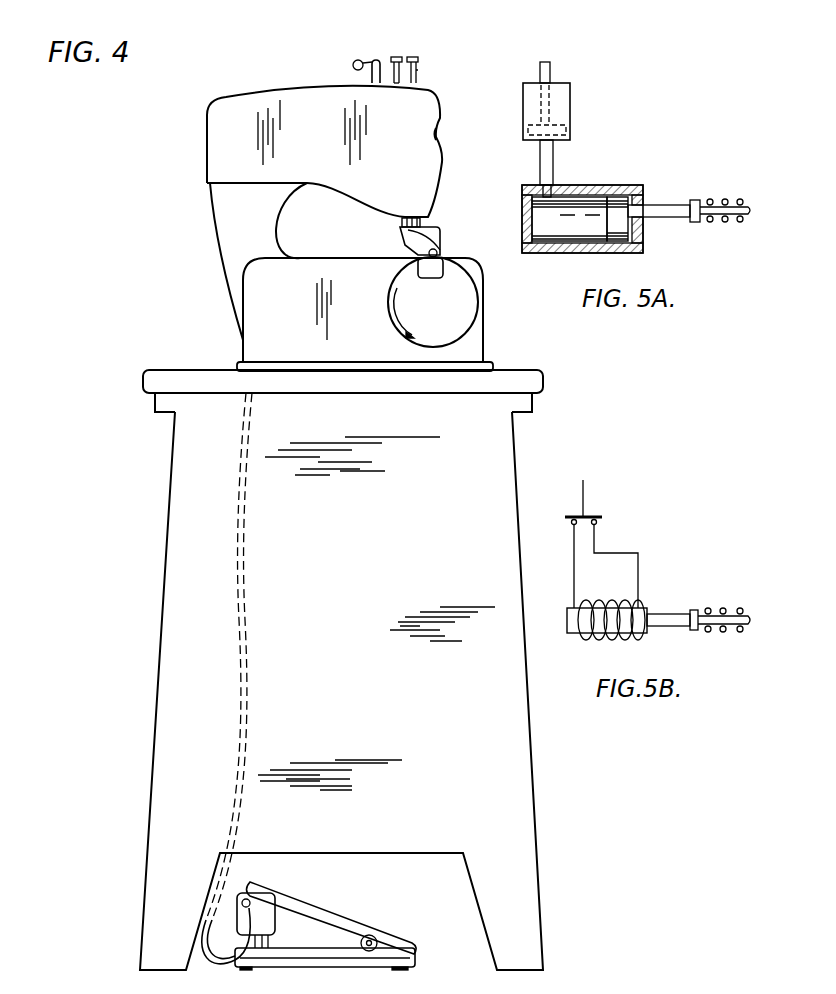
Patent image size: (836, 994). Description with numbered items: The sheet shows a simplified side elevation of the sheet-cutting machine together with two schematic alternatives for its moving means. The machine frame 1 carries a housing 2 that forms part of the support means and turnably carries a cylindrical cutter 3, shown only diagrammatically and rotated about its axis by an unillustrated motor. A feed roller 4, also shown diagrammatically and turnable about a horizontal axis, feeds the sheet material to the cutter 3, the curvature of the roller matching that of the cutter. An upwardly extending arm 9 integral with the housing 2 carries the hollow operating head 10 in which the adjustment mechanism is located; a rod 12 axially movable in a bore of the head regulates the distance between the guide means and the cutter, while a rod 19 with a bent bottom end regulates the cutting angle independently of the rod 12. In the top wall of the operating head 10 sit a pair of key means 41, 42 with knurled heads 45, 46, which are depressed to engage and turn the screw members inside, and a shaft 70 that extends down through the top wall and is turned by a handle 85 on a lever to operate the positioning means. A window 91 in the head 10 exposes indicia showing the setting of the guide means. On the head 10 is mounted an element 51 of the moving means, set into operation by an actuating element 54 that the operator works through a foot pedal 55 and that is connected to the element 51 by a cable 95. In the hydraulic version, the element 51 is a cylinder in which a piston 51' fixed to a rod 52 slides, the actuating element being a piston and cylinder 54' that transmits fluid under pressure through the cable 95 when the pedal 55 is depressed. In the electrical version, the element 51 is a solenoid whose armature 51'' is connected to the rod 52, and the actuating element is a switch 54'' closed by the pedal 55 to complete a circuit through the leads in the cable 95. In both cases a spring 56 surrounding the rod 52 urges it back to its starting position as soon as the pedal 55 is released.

In FIG. 4, the machine frame 1 is at (520, 790).
In FIG. 4, the housing 2 is at (478, 337).
In FIG. 4, the cylindrical cutter 3 is at (468, 292).
In FIG. 4, the feed roller 4 is at (436, 267).
In FIG. 4, the arm 9 is at (240, 221).
In FIG. 4, the operating head 10 is at (423, 120).
In FIG. 4, the rod 12 is at (423, 223).
In FIG. 4, the rod 19 is at (402, 225).
In FIG. 4, the key means 41 is at (400, 50).
In FIG. 4, the key means 42 is at (419, 70).
In FIG. 4, the knurled head 45 is at (410, 57).
In FIG. 4, the knurled head 46 is at (418, 58).
In FIG. 4, the actuating element 54 is at (287, 912).
In FIG. 4, the foot pedal 55 is at (370, 936).
In FIG. 4, the shaft 70 is at (371, 58).
In FIG. 4, the handle 85 is at (353, 65).
In FIG. 4, the window 91 is at (437, 138).
In FIG. 4, the cable 95 is at (250, 724).
In FIG. 5A, the cable 95 is at (553, 158).
In FIG. 5B, the cable 95 is at (576, 550).
In FIG. 5A, the element 51 is at (583, 198).
In FIG. 5B, the element 51 is at (609, 638).
In FIG. 5A, the piston 51' is at (627, 236).
In FIG. 5B, the armature 51'' is at (590, 634).
In FIG. 5A, the rod 52 is at (660, 205).
In FIG. 5B, the rod 52 is at (658, 617).
In FIG. 5A, the piston and cylinder 54' is at (572, 101).
In FIG. 5B, the electrical switch 54'' is at (601, 502).
In FIG. 5A, the spring 56 is at (726, 200).
In FIG. 5B, the spring 56 is at (725, 611).